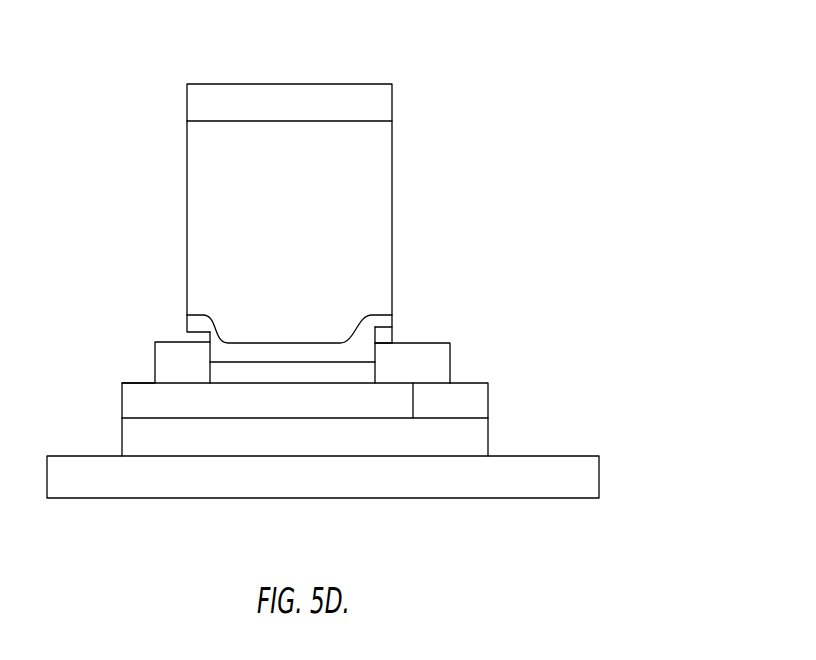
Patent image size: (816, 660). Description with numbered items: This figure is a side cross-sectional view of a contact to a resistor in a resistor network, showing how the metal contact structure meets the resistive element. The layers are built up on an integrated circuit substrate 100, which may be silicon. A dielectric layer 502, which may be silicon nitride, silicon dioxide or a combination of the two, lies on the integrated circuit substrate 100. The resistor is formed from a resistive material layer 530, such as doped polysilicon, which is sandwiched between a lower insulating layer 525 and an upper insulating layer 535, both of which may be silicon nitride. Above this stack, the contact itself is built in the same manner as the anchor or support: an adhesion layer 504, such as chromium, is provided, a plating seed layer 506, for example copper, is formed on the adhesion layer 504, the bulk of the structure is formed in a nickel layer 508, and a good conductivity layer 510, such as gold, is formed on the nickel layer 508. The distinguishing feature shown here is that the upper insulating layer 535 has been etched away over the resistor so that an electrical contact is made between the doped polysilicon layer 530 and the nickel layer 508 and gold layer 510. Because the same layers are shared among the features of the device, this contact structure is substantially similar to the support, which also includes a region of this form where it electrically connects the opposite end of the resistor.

The integrated circuit substrate 100 is at (597, 525).
The dielectric layer 502 is at (599, 479).
The adhesion layer 504 is at (362, 373).
The plating seed layer 506 is at (383, 321).
The nickel layer 508 is at (360, 207).
The good conductivity layer 510 is at (375, 105).
The insulating layer 525 is at (477, 442).
The resistive material layer 530 is at (395, 397).
The upper insulating layer 535 is at (473, 402).